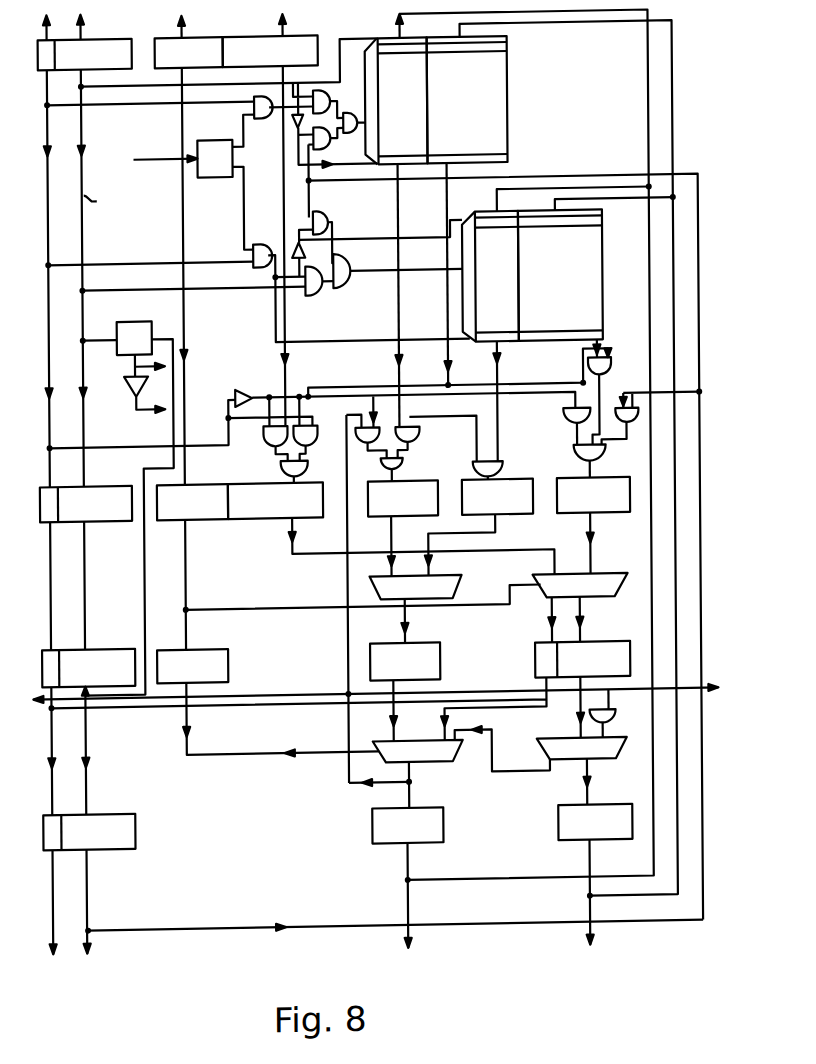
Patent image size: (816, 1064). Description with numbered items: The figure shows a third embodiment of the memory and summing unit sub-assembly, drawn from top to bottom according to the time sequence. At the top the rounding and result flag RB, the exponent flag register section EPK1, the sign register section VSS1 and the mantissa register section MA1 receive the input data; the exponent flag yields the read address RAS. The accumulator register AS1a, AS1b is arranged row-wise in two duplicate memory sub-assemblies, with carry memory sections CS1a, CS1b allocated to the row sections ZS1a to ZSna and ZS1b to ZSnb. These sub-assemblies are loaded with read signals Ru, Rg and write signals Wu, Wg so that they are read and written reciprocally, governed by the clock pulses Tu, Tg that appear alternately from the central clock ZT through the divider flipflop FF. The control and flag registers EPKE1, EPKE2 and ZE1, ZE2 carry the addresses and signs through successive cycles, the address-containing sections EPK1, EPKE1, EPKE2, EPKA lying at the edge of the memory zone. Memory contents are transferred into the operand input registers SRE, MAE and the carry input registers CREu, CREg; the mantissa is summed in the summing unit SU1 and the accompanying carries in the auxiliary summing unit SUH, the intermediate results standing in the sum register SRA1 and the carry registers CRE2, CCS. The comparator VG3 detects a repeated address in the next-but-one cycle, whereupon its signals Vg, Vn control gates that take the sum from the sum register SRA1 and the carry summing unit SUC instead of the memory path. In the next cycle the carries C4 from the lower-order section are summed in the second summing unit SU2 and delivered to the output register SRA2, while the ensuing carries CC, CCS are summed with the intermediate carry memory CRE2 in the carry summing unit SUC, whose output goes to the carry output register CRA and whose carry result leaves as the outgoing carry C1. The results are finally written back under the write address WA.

The rounding and result flag RB is at (63, 25).
The exponent flag register section EPK1 is at (85, 54).
The sign register section VSS1 is at (188, 41).
The mantissa register section MA1 is at (269, 40).
The read signal Ru is at (368, 33).
The first row section of accumulator memory a ZS1a is at (510, 44).
The n-th row section of accumulator memory a ZSna is at (492, 157).
The carry memory section a CS1a is at (396, 100).
The accumulator register a AS1a is at (467, 99).
The odd-cycle clock pulse Tu is at (234, 134).
The even-cycle clock pulse Tg is at (246, 190).
The divider flipflop FF is at (214, 177).
The central clock ZT is at (144, 162).
The read address RAS is at (112, 203).
The write signal Wg is at (357, 198).
The write signal Wu is at (466, 221).
The first row section of accumulator memory b ZS1b is at (586, 231).
The n-th row section of accumulator memory b ZSnb is at (584, 333).
The carry memory section b CS1b is at (490, 276).
The accumulator register b AS1b is at (560, 275).
The read signal Rg is at (457, 275).
The comparator signal Vn is at (430, 432).
The comparator signal Vg is at (527, 405).
The comparator VG3 is at (127, 494).
The first control and flag register EPKE1 is at (86, 504).
The first sign input register ZE1 is at (192, 502).
The mantissa input register MAE is at (275, 500).
The carry input register CREu is at (403, 498).
The carry input register CREg is at (497, 497).
The second input register SRE is at (593, 495).
The auxiliary summing unit SUH is at (457, 583).
The summing unit SU1 is at (595, 578).
The intermediate carry memory CRE2 is at (405, 661).
The carry register CCS is at (534, 660).
The sum register SRA1 is at (582, 659).
The second control and flag register EPKE2 is at (88, 668).
The second sign register ZE2 is at (192, 666).
The incoming carry C4 is at (628, 708).
The ensuing carry CC is at (494, 726).
The carry summing unit SUC is at (419, 752).
The outgoing carry C1 is at (345, 778).
The second summing unit SU2 is at (598, 752).
The address output register section EPKA is at (89, 832).
The carry output register CRA is at (407, 825).
The output register SRA2 is at (595, 822).
The write address WA is at (249, 923).